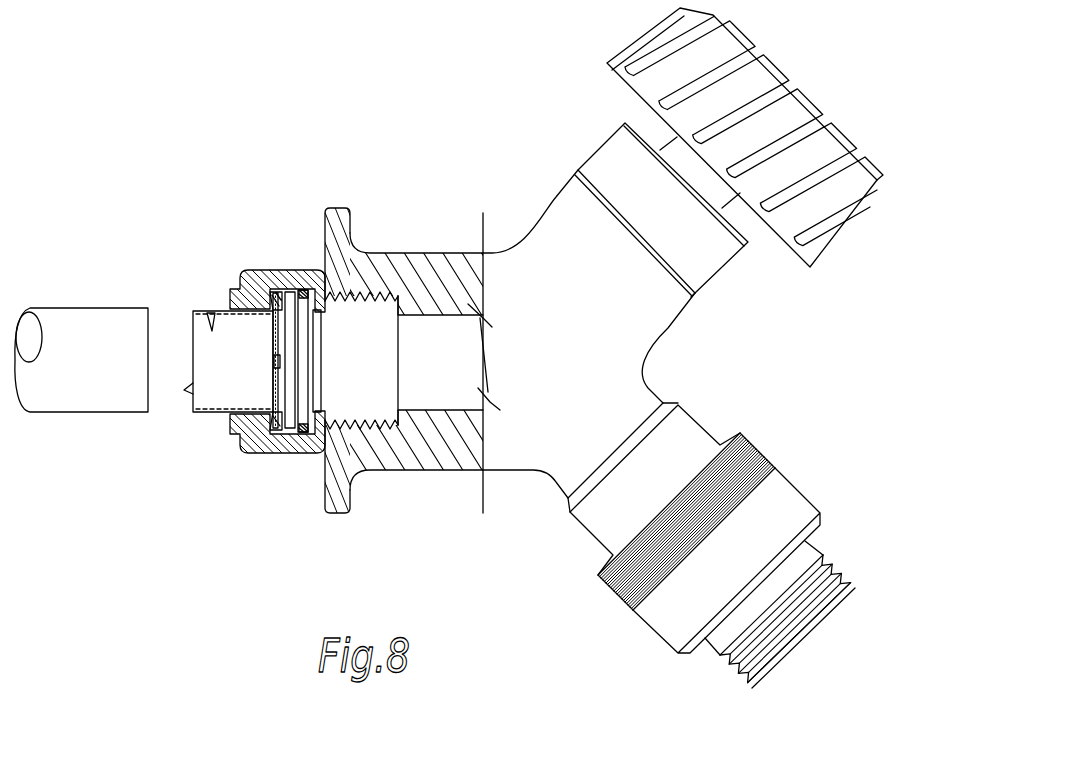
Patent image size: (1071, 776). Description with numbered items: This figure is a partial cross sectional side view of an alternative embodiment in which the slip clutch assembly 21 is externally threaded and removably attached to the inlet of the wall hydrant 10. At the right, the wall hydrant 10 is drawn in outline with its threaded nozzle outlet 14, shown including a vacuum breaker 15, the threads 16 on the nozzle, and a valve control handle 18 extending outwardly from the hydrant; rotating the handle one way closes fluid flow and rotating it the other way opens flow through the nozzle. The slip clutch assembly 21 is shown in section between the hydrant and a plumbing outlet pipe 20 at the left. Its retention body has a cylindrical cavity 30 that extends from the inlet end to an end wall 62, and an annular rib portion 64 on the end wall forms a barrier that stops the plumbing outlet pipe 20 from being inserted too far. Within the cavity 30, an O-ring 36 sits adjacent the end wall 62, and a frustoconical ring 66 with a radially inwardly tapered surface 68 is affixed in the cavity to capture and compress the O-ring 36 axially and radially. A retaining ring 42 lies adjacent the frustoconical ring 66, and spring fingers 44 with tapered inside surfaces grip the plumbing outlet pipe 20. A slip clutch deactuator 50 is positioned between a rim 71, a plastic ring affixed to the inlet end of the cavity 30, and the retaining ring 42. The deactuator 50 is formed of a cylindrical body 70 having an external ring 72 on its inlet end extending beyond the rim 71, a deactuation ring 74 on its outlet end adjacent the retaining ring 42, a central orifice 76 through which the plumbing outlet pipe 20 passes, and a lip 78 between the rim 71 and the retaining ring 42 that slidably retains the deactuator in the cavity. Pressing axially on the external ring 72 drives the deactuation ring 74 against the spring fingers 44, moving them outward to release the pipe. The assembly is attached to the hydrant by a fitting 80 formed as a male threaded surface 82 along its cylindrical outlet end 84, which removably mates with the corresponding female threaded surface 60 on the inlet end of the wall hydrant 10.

The wall hydrant 10 is at (796, 58).
The threaded nozzle outlet 14 is at (809, 667).
The vacuum breaker 15 is at (790, 480).
The threads 16 is at (850, 582).
The valve control handle 18 is at (840, 148).
The plumbing outlet pipe 20 is at (101, 308).
The slip clutch assembly 21 is at (291, 262).
The cylindrical cavity 30 is at (277, 455).
The O-ring 36 is at (306, 288).
The retaining ring 42 is at (274, 361).
The spring fingers 44 is at (277, 318).
The slip clutch deactuator 50 is at (190, 388).
The threaded surface 60 is at (378, 413).
The end wall 62 is at (322, 455).
The rib portion 64 is at (321, 410).
The frustoconical ring 66 is at (296, 365).
The frustoconical tapered surface 68 is at (296, 333).
The cylindrical body 70 is at (213, 307).
The rim 71 is at (233, 434).
The external ring 72 is at (200, 308).
The deactuation ring 74 is at (274, 400).
The central orifice 76 is at (211, 322).
The lip 78 is at (275, 291).
The fitting 80 is at (380, 290).
The male threaded surface 82 is at (350, 290).
The cylindrical outlet end 84 is at (400, 303).